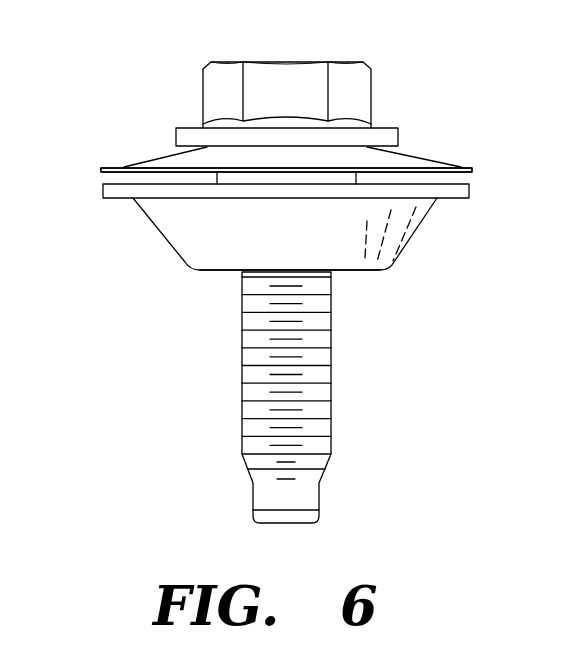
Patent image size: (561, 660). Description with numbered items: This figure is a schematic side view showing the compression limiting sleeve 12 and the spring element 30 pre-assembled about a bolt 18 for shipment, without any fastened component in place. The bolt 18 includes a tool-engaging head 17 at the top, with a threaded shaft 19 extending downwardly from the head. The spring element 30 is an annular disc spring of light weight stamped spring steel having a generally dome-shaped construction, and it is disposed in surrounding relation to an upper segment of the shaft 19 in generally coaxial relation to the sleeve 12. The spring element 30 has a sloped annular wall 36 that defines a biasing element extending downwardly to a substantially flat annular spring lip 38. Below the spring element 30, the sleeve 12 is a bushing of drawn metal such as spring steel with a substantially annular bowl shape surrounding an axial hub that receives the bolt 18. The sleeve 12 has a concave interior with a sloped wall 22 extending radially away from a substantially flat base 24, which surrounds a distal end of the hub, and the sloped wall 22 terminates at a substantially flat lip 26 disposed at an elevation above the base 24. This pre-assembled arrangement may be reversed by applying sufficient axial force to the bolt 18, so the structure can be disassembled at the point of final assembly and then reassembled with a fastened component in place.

The tool-engaging head 17 is at (318, 62).
The sloped annular wall 36 is at (415, 161).
The annular spring lip 38 is at (454, 166).
The spring element 30 is at (125, 162).
The lip 26 is at (118, 200).
The compression limiting sleeve 12 is at (155, 236).
The sloped wall 22 is at (417, 233).
The base 24 is at (353, 272).
The bolt 18 is at (230, 406).
The threaded shaft 19 is at (240, 325).